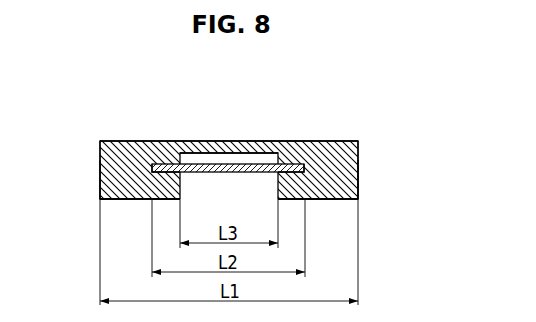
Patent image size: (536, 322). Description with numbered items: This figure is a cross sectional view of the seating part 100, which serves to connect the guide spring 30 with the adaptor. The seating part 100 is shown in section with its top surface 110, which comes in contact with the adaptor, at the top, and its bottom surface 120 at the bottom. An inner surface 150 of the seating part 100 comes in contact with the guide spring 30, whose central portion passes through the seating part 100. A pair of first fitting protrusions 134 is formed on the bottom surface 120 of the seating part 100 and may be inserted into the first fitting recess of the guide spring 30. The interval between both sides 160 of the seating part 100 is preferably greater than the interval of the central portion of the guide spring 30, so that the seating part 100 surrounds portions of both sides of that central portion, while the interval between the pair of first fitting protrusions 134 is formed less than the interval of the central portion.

The seating part 100 is at (251, 139).
The top surface 110 is at (170, 142).
The guide spring 30 is at (202, 151).
The inner surface 150 is at (152, 150).
The both sides 160 is at (99, 171).
The first fitting protrusions 134 is at (290, 188).
The bottom surface 120 is at (130, 200).